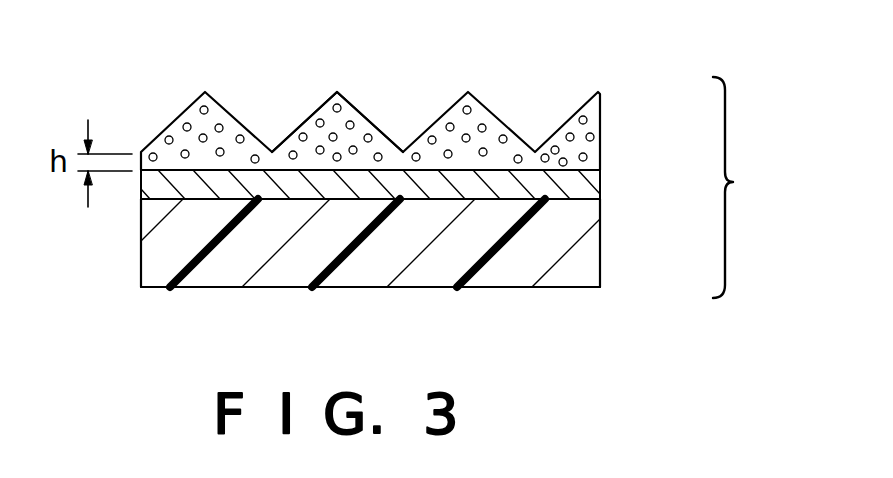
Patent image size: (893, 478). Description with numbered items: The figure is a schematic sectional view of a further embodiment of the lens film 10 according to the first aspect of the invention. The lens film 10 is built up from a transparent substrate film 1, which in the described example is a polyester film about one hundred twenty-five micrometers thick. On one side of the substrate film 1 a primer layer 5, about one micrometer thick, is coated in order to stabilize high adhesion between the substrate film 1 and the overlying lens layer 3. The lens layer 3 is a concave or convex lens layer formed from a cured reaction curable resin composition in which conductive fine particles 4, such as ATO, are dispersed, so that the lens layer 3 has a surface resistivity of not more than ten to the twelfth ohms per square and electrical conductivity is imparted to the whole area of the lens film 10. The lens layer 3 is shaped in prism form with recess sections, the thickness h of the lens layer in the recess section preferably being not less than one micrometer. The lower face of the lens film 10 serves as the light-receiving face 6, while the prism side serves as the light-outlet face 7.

The transparent substrate film 1 is at (583, 263).
The lens layer 3 is at (600, 107).
The conductive fine particles 4 is at (588, 155).
The primer layer 5 is at (592, 186).
The light-receiving face 6 is at (362, 287).
The light-outlet face 7 is at (360, 113).
The lens film 10 is at (793, 203).